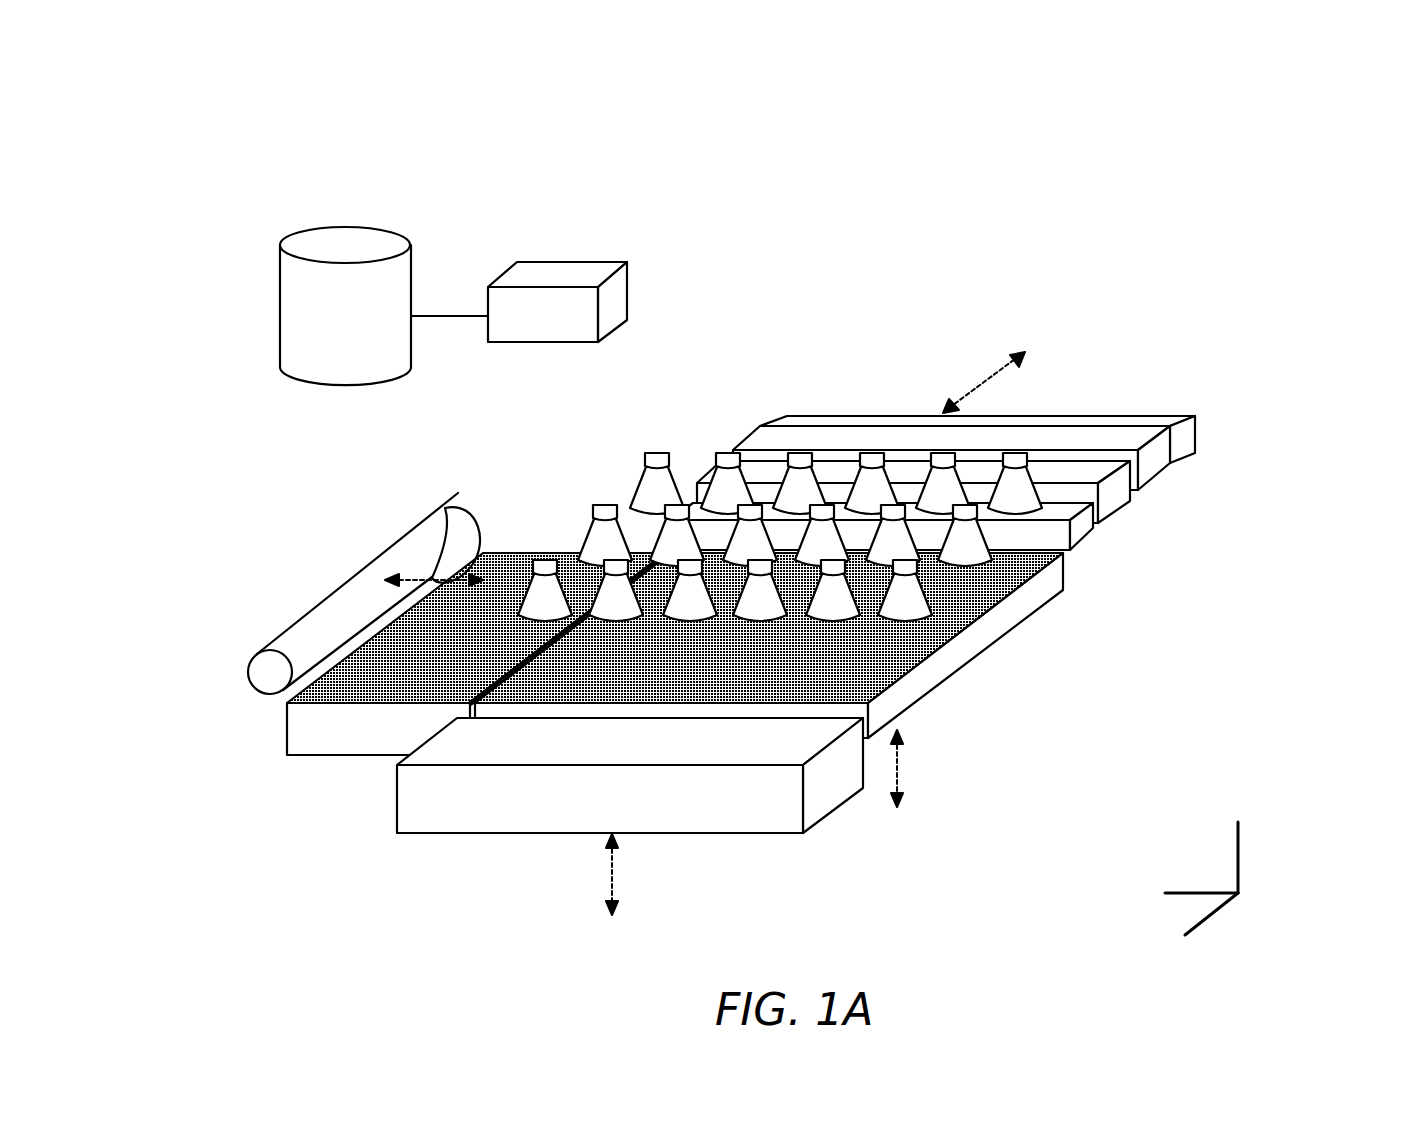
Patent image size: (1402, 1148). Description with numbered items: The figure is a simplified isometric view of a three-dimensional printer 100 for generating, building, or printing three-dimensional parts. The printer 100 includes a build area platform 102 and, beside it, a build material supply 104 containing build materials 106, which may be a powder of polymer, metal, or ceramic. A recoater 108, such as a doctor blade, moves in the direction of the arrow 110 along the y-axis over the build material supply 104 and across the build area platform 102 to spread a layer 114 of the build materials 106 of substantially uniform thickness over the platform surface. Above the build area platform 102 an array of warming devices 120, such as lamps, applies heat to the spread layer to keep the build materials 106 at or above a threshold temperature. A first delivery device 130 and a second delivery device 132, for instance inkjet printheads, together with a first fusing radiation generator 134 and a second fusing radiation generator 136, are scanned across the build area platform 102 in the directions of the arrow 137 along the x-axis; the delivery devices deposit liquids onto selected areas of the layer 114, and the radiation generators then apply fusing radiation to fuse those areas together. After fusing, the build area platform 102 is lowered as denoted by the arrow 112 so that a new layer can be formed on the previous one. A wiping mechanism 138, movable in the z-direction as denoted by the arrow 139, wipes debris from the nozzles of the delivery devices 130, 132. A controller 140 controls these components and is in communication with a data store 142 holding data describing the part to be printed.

The three-dimensional printer 100 is at (358, 173).
The build area platform 102 is at (770, 679).
The build material supply 104 is at (405, 729).
The build materials 106 is at (320, 694).
The recoater 108 is at (302, 615).
The arrow 110 is at (436, 526).
The arrow 112 is at (905, 763).
The layer 114 is at (987, 620).
The warming devices 120 is at (658, 452).
The first delivery device 130 is at (1115, 512).
The second delivery device 132 is at (1163, 480).
The first fusing radiation generator 134 is at (1097, 540).
The second fusing radiation generator 136 is at (1162, 413).
The arrow 137 is at (972, 378).
The wiping mechanism 138 is at (457, 835).
The arrow 139 is at (620, 870).
The controller 140 is at (580, 262).
The data store 142 is at (345, 306).